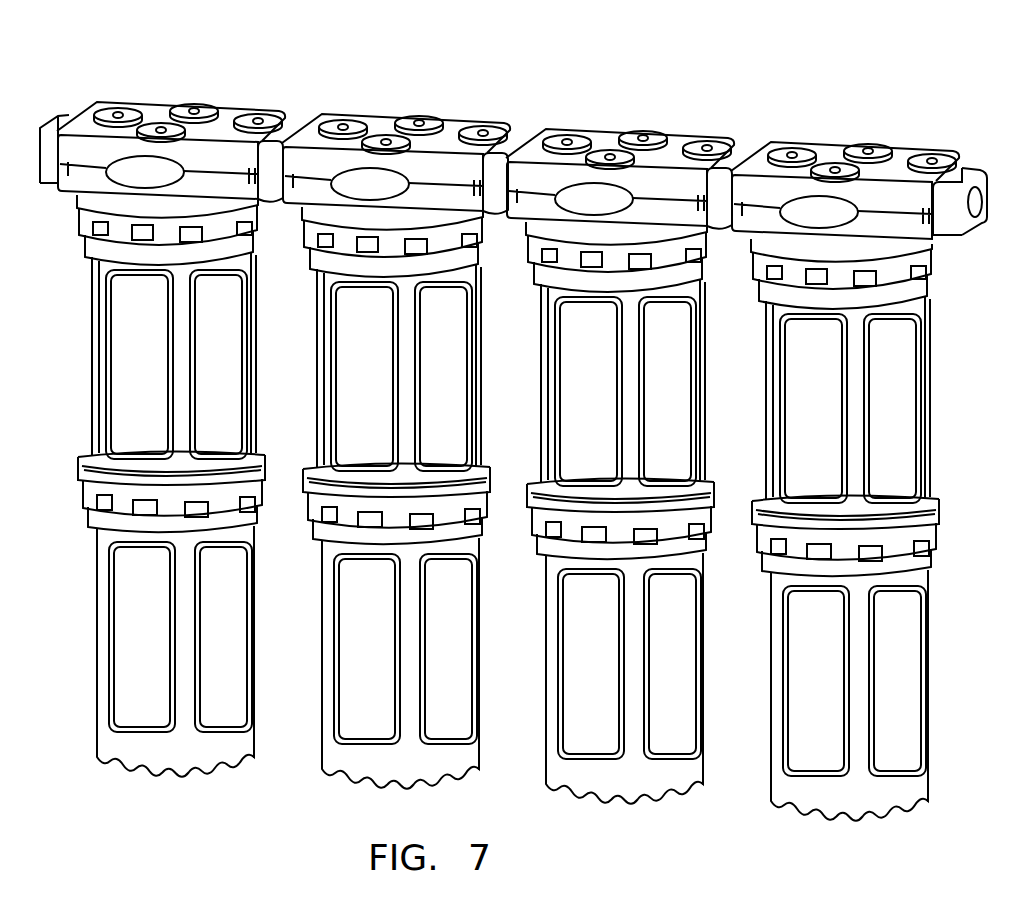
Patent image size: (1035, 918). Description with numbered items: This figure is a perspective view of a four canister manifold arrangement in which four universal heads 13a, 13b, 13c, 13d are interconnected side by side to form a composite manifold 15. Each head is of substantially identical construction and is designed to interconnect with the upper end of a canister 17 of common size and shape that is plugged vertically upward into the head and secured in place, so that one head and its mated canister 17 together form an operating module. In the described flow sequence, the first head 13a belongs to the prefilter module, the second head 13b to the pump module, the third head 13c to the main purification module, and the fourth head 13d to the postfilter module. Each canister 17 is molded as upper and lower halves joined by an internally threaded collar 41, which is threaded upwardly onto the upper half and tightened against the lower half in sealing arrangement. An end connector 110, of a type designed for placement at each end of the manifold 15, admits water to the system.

The composite manifold 15 is at (78, 103).
The first head 13a is at (243, 98).
The second head 13b is at (457, 125).
The third head 13c is at (683, 138).
The fourth head 13d is at (912, 152).
The canister 17 is at (80, 353).
The internally threaded collar 41 is at (750, 261).
The end connector 110 is at (46, 170).